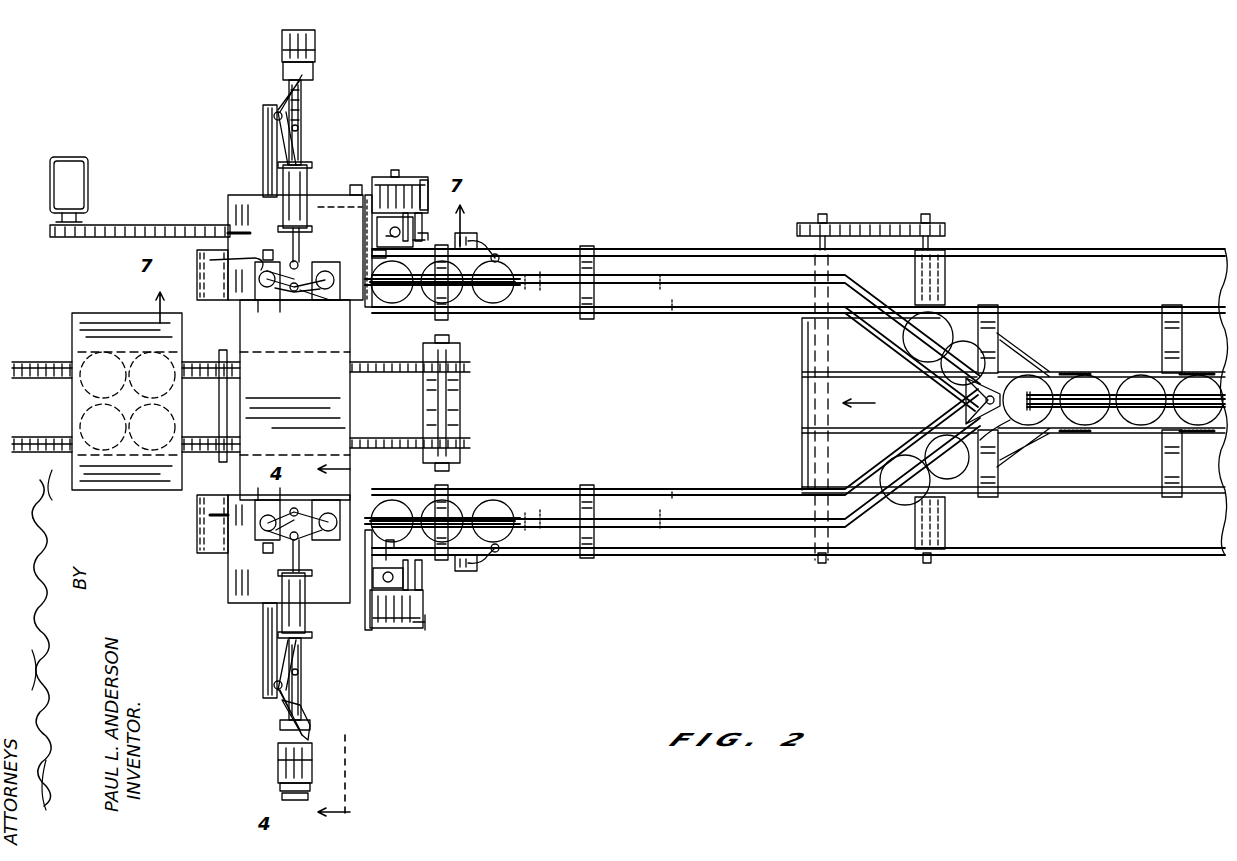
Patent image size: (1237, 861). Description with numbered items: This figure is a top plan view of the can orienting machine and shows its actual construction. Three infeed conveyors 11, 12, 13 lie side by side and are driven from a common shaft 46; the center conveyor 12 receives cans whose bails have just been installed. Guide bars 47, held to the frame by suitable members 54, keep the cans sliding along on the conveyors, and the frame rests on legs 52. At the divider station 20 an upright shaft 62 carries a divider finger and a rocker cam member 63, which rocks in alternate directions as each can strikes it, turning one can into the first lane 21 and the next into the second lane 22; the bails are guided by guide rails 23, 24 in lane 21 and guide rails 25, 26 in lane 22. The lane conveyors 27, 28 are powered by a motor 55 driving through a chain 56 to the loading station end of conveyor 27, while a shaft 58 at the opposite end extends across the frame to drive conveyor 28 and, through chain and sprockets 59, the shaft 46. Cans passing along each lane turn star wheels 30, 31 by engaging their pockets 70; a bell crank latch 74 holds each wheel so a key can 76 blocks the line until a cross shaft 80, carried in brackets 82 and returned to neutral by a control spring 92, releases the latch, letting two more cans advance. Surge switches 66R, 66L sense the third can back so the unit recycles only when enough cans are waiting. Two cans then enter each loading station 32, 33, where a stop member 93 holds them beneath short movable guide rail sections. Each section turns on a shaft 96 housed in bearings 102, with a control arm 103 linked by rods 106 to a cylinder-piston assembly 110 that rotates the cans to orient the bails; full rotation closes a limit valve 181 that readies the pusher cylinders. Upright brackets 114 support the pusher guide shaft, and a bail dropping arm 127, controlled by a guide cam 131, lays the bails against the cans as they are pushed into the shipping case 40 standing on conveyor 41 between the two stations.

The infeed conveyor 11 is at (802, 350).
The center infeed conveyor 12 is at (804, 402).
The infeed conveyor 13 is at (804, 450).
The divider station 20 is at (1030, 374).
The first lane 21 is at (952, 320).
The second lane 22 is at (906, 504).
The guide rail 23 is at (690, 276).
The guide rail 24 is at (652, 312).
The guide rail 25 is at (654, 500).
The guide rail 26 is at (680, 544).
The conveyor 27 is at (640, 250).
The conveyor 28 is at (634, 556).
The star wheel 30 is at (428, 212).
The star wheel 31 is at (428, 576).
The loading station 32 is at (333, 146).
The loading station 33 is at (222, 616).
The shipping case 40 is at (90, 364).
The conveyor 41 is at (460, 414).
The common shaft 46 is at (107, 312).
The guide bar 47 is at (882, 332).
The leg 52 is at (174, 236).
The mounting member 54 is at (988, 302).
The motor 55 is at (84, 182).
The chain 56 is at (138, 224).
The shaft 58 is at (926, 214).
The chain and sprockets 59 is at (866, 220).
The upright shaft 62 is at (994, 416).
The rocker cam member 63 is at (968, 404).
The right surge switch 66R is at (468, 238).
The left surge switch 66L is at (476, 566).
The pocket 70 is at (450, 260).
The bell crank latch 74 is at (420, 202).
The key can 76 is at (406, 300).
The cross shaft 80 is at (366, 190).
The bracket 82 is at (380, 628).
The control spring 92 is at (380, 180).
The stop member 93 is at (225, 520).
The shaft 96 is at (258, 312).
The bearing 102 is at (320, 274).
The control arm 103 is at (294, 514).
The rod 106 is at (296, 302).
The cylinder-piston assembly 110 is at (286, 204).
The upright bracket 114 is at (282, 796).
The bail dropping arm 127 is at (272, 708).
The guide cam 131 is at (274, 688).
The limit valve 181 is at (210, 260).